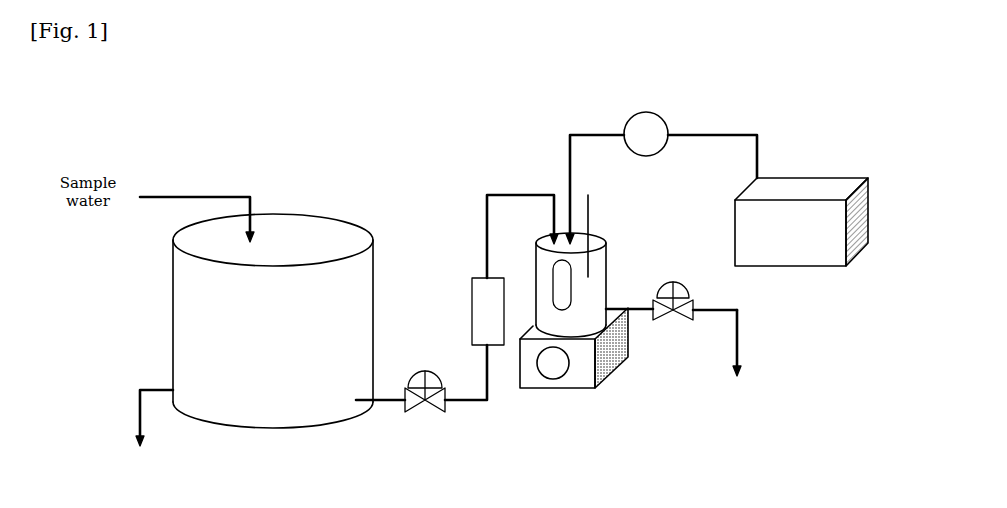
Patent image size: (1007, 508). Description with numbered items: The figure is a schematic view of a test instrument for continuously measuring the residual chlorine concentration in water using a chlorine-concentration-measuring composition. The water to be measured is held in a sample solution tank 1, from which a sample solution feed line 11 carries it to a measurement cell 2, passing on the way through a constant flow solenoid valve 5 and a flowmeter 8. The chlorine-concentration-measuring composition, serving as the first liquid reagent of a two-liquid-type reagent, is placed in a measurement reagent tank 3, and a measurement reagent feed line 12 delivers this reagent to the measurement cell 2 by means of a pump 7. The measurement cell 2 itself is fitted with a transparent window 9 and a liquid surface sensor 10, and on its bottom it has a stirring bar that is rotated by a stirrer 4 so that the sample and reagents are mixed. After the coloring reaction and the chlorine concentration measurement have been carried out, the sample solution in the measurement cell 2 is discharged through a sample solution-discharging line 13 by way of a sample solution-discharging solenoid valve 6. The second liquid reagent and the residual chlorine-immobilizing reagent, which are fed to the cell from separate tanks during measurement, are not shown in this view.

The sample solution tank 1 is at (190, 312).
The measurement cell 2 is at (612, 233).
The measurement reagent tank 3 is at (805, 178).
The stirrer 4 is at (588, 362).
The constant flow solenoid valve 5 is at (436, 368).
The sample solution-discharging solenoid valve 6 is at (674, 282).
The pump 7 is at (652, 112).
The flowmeter 8 is at (472, 278).
The transparent window 9 is at (555, 290).
The liquid surface sensor 10 is at (590, 203).
The sample solution feed line 11 is at (525, 193).
The measurement reagent feed line 12 is at (568, 147).
The sample solution-discharging line 13 is at (739, 343).